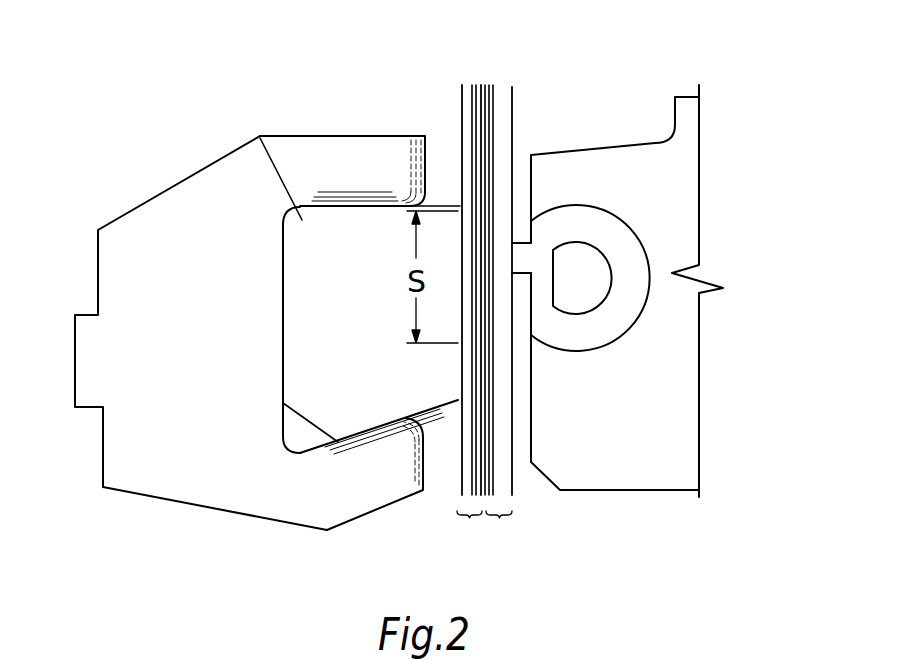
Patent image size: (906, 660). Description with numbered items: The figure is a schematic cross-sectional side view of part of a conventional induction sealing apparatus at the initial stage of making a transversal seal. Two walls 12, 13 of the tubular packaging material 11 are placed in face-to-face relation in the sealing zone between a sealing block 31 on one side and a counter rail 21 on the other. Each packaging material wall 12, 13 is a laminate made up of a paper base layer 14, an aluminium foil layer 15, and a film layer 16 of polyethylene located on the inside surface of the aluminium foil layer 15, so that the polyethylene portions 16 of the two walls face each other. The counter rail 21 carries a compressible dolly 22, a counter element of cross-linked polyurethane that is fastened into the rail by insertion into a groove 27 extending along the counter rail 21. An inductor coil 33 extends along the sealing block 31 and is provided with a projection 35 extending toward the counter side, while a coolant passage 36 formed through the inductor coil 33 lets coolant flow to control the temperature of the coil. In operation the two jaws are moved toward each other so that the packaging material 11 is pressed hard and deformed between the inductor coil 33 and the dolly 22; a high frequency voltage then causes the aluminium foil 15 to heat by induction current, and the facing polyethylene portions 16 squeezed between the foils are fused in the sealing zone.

The packaging material 11 is at (603, 65).
The packaging material wall 12 is at (468, 522).
The packaging material wall 13 is at (500, 522).
The paper base layer 14 is at (505, 100).
The aluminium foil layer 15 is at (490, 83).
The film layer 16 is at (485, 83).
The counter rail 21 is at (192, 202).
The dolly 22 is at (332, 222).
The groove 27 is at (308, 442).
The sealing block 31 is at (575, 168).
The inductor coil 33 is at (615, 318).
The projection 35 is at (517, 260).
The coolant passage 36 is at (587, 262).